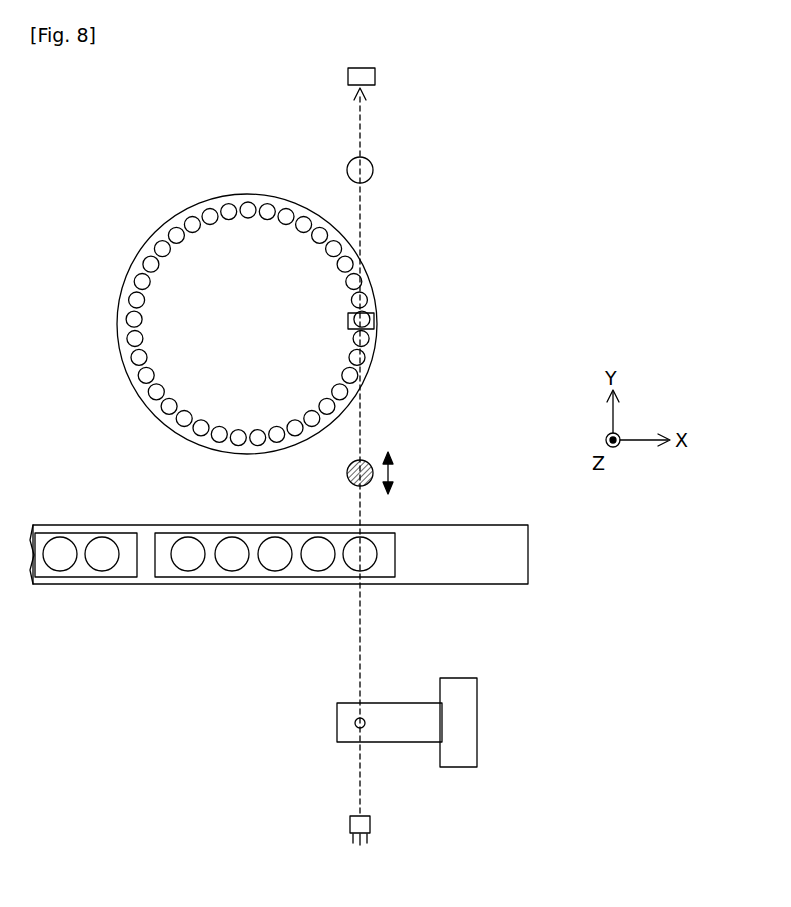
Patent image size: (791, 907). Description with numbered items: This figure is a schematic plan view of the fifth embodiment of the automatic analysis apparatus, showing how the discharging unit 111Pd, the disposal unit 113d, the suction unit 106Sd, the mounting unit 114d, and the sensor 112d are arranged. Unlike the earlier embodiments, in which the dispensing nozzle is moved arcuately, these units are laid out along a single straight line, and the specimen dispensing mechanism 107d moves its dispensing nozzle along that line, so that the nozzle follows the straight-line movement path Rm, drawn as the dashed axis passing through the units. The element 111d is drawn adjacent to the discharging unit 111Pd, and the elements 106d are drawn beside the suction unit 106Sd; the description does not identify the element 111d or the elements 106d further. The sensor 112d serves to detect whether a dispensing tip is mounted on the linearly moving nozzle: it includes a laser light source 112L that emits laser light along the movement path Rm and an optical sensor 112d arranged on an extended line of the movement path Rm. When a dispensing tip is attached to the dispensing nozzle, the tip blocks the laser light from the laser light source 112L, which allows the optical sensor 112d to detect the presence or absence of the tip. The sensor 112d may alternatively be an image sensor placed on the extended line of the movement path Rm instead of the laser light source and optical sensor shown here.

The sensor 112d is at (376, 76).
The movement path Rm is at (356, 126).
The disposal unit 113d is at (374, 168).
The rotary wheel with holes 111d is at (168, 313).
The discharging unit 111Pd is at (377, 309).
The specimen dispensing mechanism 107d is at (348, 470).
The container tray 106d is at (120, 580).
The suction unit 106Sd is at (372, 568).
The mounting unit 114d is at (337, 725).
The laser light source 112L is at (371, 822).